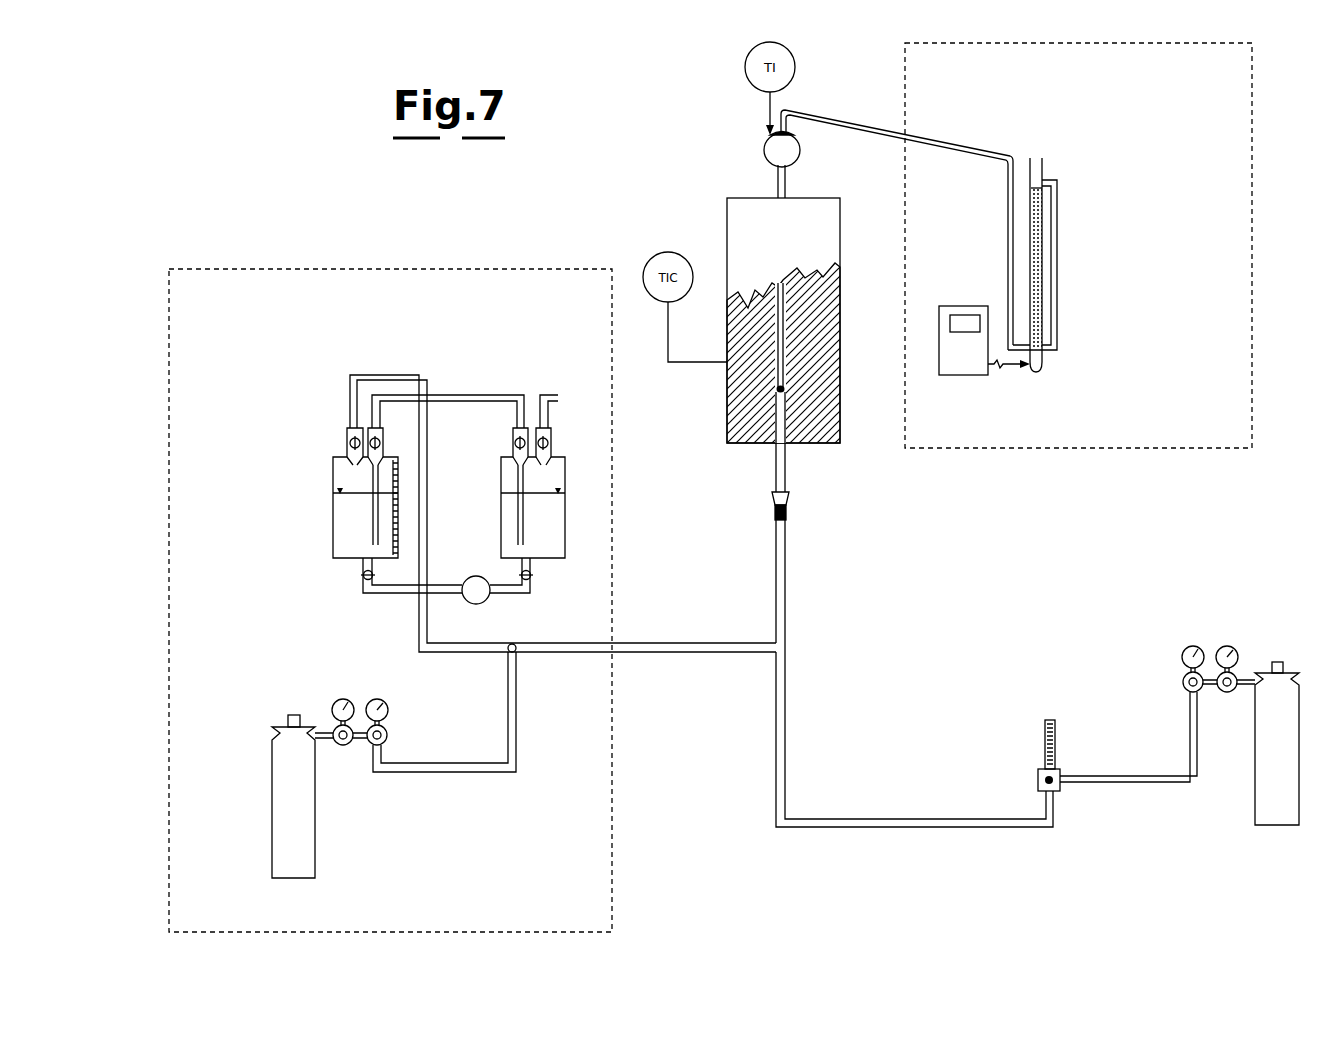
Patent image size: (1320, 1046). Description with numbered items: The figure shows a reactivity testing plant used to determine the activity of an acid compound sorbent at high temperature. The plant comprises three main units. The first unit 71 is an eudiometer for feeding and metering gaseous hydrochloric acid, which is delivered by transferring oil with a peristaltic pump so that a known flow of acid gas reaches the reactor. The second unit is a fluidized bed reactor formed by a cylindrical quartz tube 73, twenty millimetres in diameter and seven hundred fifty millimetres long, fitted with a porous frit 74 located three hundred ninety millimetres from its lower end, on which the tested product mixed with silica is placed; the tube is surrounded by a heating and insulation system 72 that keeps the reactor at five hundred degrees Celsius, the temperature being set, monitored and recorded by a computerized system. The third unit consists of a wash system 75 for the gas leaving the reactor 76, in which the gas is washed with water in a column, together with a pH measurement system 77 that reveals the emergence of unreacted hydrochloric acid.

The first unit for feeding and metering gaseous HCl 71 is at (255, 272).
The heating and insulation system 72 is at (741, 194).
The cylindrical quartz tube 73 is at (787, 470).
The porous frit 74 is at (783, 392).
The wash system 75 is at (1245, 210).
The reactor 76 is at (1042, 282).
The pH measurement system 77 is at (965, 365).